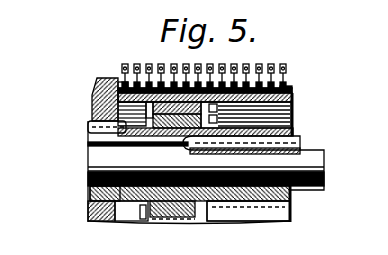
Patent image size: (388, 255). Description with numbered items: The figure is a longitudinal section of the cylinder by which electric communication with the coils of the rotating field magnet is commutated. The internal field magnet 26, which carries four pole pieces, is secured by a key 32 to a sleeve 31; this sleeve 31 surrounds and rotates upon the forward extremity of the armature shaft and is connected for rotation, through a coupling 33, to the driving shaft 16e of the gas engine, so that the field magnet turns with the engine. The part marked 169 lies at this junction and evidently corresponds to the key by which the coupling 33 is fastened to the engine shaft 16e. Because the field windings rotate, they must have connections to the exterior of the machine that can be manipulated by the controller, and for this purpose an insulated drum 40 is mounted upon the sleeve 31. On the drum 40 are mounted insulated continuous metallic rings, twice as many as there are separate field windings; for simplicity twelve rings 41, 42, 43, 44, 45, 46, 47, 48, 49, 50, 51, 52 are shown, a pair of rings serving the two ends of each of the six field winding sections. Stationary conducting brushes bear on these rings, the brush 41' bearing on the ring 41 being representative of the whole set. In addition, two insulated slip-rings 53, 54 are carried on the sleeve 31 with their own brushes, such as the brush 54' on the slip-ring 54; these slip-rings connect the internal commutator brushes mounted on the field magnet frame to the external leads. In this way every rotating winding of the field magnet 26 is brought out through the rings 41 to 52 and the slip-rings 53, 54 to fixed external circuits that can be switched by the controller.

The contact 54' is at (134, 54).
The insulated slip-ring 53 is at (138, 62).
The insulated continuous metallic ring 52 is at (149, 63).
The insulated continuous metallic ring 51 is at (161, 63).
The insulated continuous metallic ring 50 is at (174, 63).
The insulated continuous metallic ring 49 is at (186, 63).
The insulated continuous metallic ring 48 is at (199, 63).
The insulated continuous metallic ring 47 is at (211, 63).
The insulated continuous metallic ring 46 is at (223, 63).
The insulated continuous metallic ring 45 is at (235, 63).
The insulated continuous metallic ring 44 is at (247, 63).
The insulated continuous metallic ring 43 is at (260, 63).
The insulated continuous metallic ring 42 is at (272, 63).
The stationary conducting brush 41' is at (300, 63).
The insulated continuous metallic ring 41 is at (298, 76).
The insulated drum 40 is at (293, 93).
The insulated slip-ring 54 is at (109, 68).
The internal field magnet 26 is at (95, 92).
The key 32 is at (90, 127).
The sleeve 31 is at (90, 195).
The tube 169 is at (300, 150).
The driving shaft 16e is at (318, 157).
The coupling 33 is at (292, 205).